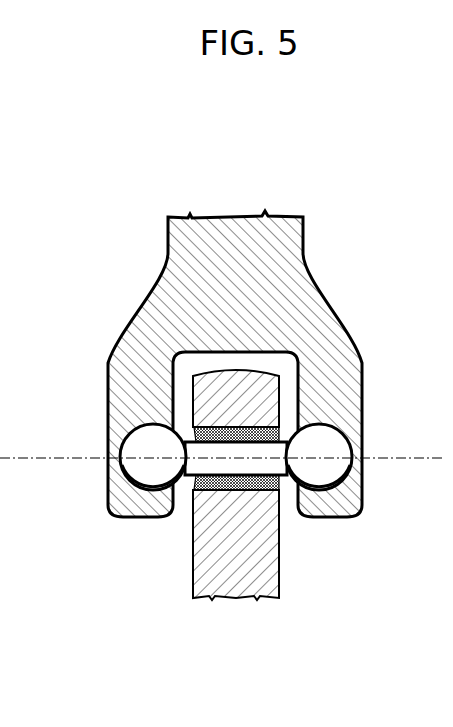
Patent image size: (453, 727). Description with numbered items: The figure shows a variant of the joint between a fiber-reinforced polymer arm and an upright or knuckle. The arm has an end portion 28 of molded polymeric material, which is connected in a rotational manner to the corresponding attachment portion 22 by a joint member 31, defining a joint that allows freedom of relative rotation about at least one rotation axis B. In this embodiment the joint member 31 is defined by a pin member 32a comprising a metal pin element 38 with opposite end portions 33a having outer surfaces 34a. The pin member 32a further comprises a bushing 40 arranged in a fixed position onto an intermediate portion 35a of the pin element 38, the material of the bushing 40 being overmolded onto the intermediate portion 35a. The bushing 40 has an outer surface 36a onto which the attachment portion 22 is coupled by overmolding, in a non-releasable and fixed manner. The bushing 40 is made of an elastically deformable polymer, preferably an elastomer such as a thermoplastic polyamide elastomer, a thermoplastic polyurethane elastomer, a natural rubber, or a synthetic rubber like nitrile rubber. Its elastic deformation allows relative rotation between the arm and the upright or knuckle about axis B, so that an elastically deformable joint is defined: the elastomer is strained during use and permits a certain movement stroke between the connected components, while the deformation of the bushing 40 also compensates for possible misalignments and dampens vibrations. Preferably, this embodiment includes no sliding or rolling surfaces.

The end portion 28 is at (223, 290).
The attachment portion 22 is at (242, 598).
The joint member 31 is at (340, 500).
The pin member 32a is at (312, 412).
The metal pin element 38 is at (330, 412).
The end portions 33a is at (148, 479).
The outer surfaces 34a is at (144, 410).
The intermediate portion 35a is at (292, 482).
The outer surface 36a is at (250, 500).
The bushing 40 is at (190, 479).
The rotation axis B is at (12, 482).